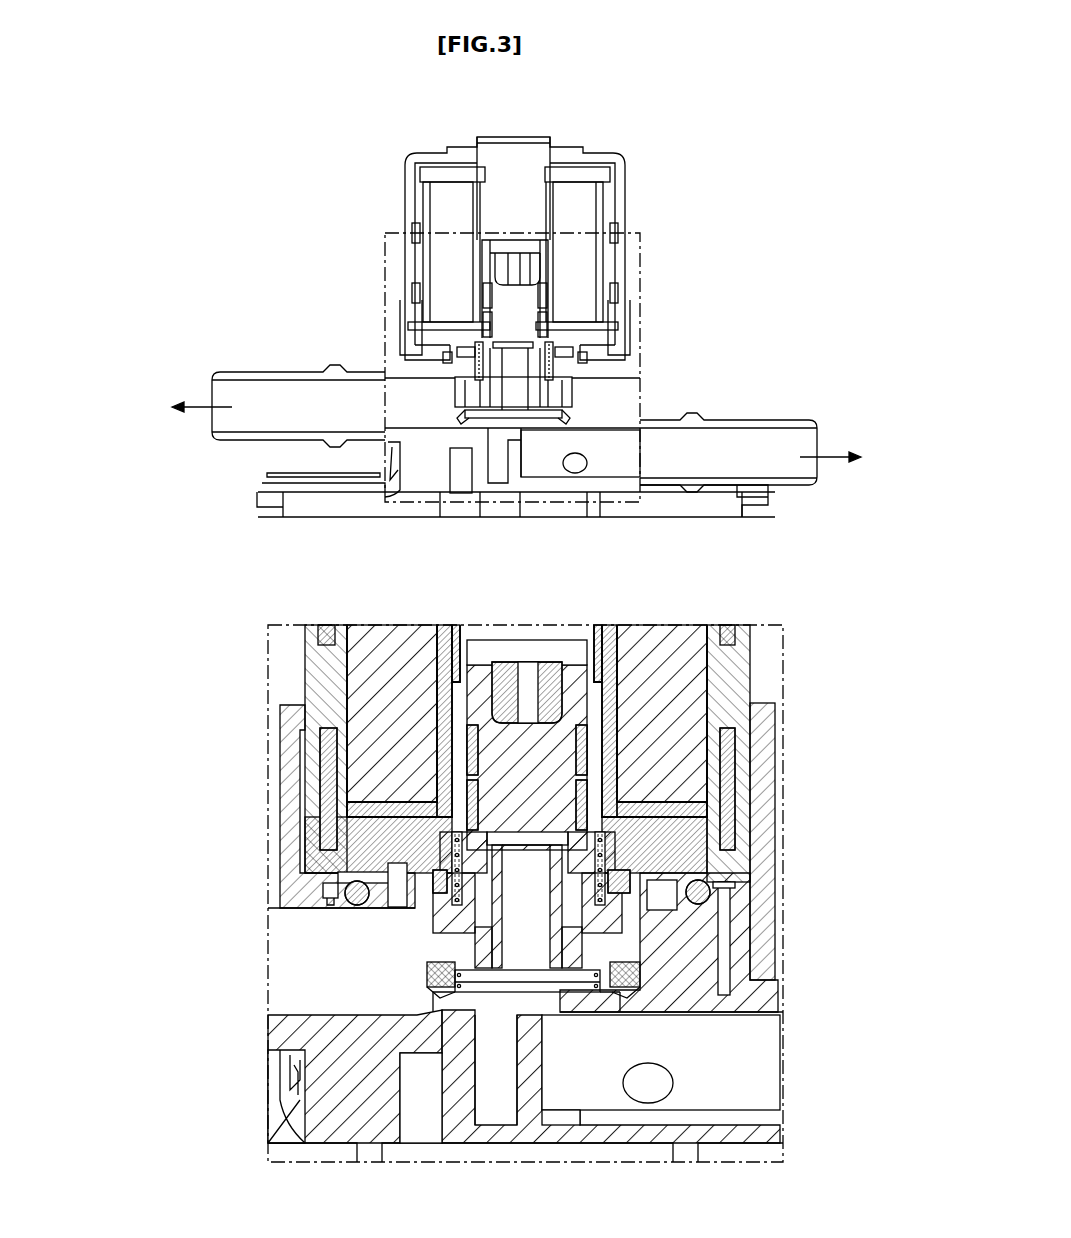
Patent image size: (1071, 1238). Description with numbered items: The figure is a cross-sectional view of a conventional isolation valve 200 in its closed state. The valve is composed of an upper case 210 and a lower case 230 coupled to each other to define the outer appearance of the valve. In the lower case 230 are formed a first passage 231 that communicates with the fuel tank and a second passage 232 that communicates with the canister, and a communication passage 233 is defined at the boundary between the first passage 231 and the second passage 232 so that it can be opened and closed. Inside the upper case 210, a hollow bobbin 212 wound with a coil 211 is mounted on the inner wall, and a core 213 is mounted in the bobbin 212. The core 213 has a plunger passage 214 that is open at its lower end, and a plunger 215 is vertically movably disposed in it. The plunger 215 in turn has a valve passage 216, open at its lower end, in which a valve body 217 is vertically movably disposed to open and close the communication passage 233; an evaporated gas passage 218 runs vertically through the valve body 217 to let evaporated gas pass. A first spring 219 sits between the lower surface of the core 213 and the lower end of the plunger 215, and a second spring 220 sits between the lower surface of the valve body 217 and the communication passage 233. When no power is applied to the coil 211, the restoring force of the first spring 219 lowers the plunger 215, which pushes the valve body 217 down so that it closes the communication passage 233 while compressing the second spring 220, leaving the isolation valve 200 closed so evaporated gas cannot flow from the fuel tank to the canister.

The isolation valve 200 is at (660, 300).
The upper case 210 is at (400, 206).
The coil 211 is at (440, 262).
The bobbin 212 is at (473, 207).
The core 213 is at (516, 188).
The plunger passage 214 is at (578, 655).
The plunger 215 is at (515, 778).
The valve passage 216 is at (455, 858).
The valve body 217 is at (455, 930).
The evaporated gas passage 218 is at (530, 940).
The first spring 219 is at (400, 893).
The second spring 220 is at (440, 1012).
The lower case 230 is at (662, 413).
The first passage 231 is at (268, 396).
The second passage 232 is at (765, 443).
The communication passage 233 is at (498, 430).